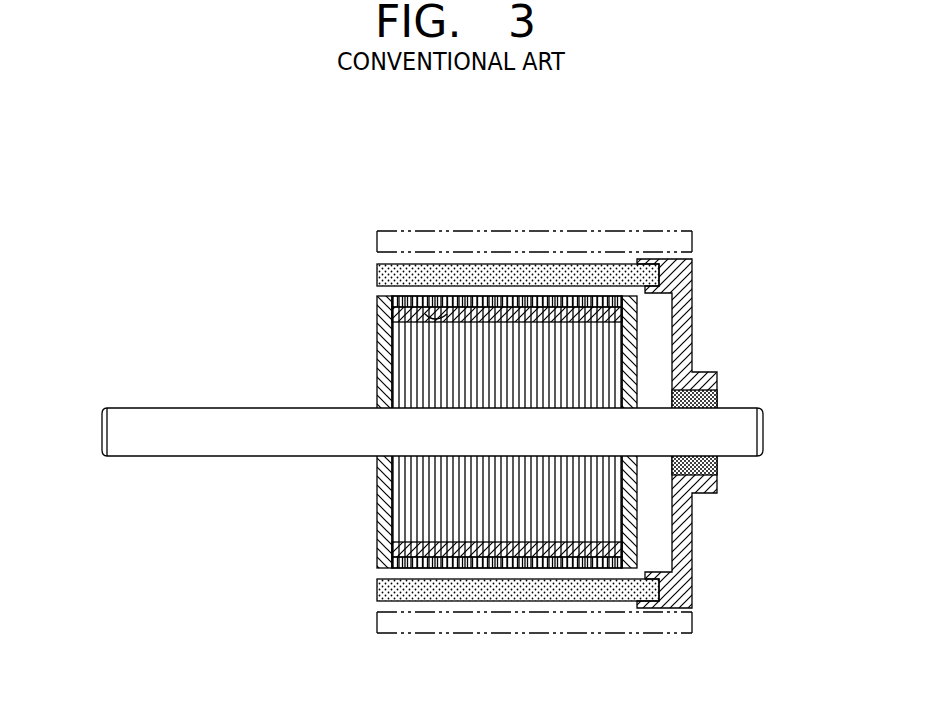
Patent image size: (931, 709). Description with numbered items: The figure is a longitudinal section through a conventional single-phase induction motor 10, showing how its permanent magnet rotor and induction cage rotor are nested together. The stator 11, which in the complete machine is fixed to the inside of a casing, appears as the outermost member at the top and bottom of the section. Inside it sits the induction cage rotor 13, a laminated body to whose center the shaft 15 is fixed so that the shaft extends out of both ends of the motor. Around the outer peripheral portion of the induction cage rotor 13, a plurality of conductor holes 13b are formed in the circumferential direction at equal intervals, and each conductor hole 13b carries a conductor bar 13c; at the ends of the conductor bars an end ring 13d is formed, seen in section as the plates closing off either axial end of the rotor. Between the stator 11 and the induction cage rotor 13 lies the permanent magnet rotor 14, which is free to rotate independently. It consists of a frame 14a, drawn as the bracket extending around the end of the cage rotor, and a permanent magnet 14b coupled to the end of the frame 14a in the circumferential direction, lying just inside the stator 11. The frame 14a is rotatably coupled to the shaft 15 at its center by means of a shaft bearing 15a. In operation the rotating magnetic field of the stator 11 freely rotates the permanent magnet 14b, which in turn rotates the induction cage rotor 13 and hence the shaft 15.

The single-phase induction motor 10 is at (200, 208).
The stator 11 is at (377, 240).
The induction cage rotor 13 is at (400, 386).
The conductor holes 13b is at (447, 313).
The conductor bar 13c is at (393, 313).
The end ring 13d is at (385, 350).
The permanent magnet rotor 14 is at (702, 287).
The frame 14a is at (695, 332).
The permanent magnet 14b is at (536, 272).
The shaft 15 is at (231, 415).
The shaft bearing 15a is at (717, 397).